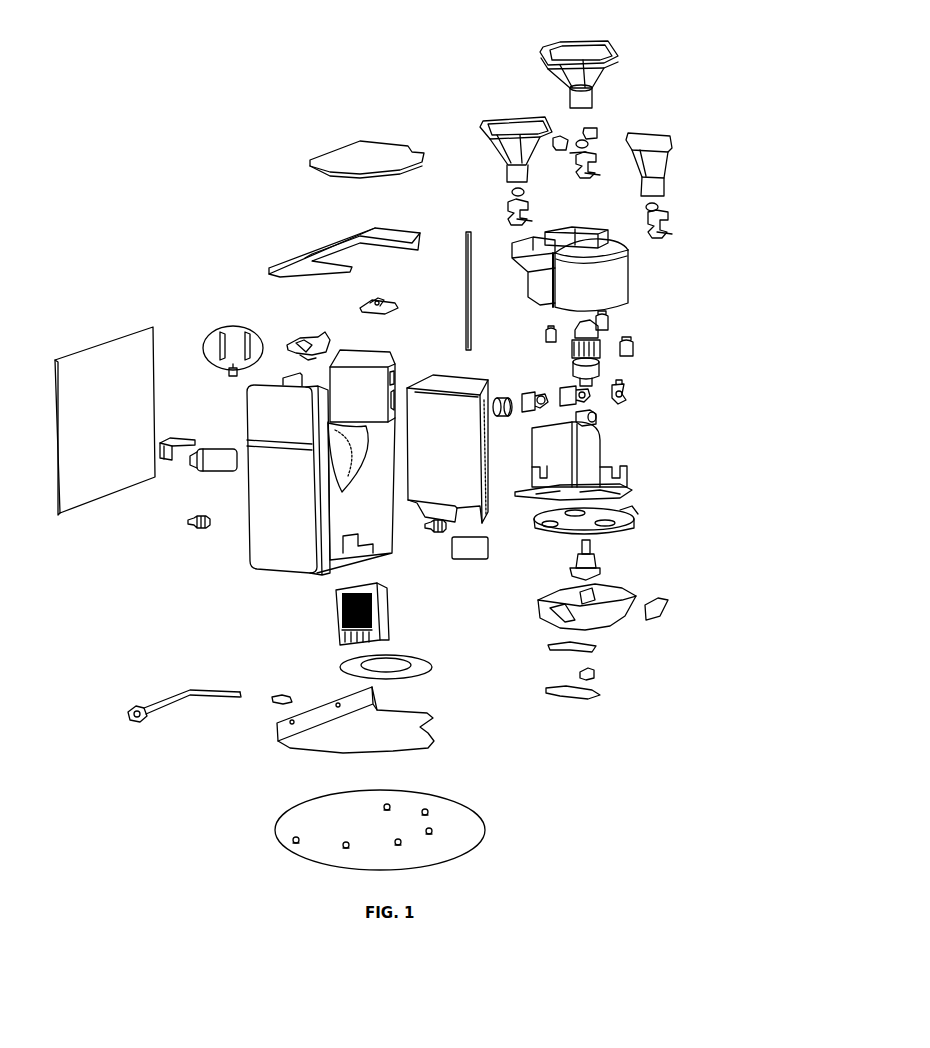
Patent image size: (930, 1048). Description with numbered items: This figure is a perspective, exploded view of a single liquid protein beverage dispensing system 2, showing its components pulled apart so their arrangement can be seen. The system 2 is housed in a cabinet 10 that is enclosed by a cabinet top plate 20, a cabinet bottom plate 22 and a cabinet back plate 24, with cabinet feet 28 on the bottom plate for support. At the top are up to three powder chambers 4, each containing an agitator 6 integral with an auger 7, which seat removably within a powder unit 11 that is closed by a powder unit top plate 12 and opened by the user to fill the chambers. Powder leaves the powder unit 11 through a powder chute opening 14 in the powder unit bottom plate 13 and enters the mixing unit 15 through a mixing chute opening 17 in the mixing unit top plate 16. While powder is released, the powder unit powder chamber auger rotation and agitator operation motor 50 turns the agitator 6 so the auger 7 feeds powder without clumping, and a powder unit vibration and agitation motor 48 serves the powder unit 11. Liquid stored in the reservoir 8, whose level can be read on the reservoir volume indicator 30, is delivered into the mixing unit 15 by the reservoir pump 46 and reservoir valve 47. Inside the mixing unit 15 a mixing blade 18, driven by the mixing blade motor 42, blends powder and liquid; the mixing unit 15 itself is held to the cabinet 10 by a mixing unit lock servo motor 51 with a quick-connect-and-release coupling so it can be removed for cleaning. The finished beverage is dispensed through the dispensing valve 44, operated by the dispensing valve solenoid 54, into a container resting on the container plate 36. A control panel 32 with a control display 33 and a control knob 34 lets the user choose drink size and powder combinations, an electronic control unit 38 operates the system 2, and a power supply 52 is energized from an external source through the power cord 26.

The dispensing system 2 is at (140, 103).
The powder chamber 4 is at (541, 72).
The agitator 6 is at (598, 150).
The auger 7 is at (600, 167).
The reservoir 8 is at (457, 387).
The cabinet 10 is at (266, 519).
The powder unit 11 is at (639, 278).
The powder unit top plate 12 is at (337, 149).
The powder unit bottom plate 13 is at (608, 448).
The powder chute opening 14 is at (562, 495).
The mixing unit 15 is at (536, 611).
The mixing unit top plate 16 is at (633, 528).
The mixing chute opening 17 is at (582, 517).
The mixing blade 18 is at (568, 563).
The cabinet top plate 20 is at (307, 250).
The cabinet bottom plate 22 is at (316, 757).
The cabinet back plate 24 is at (56, 418).
The power cord 26 is at (122, 713).
The cabinet feet 28 is at (462, 831).
The reservoir volume indicator 30 is at (463, 278).
The control panel 32 is at (402, 372).
The control display 33 is at (208, 338).
The control knob 34 is at (508, 418).
The container plate 36 is at (336, 668).
The electronic control unit 38 is at (363, 303).
The mixing blade motor 42 is at (601, 370).
The dispensing valve 44 is at (600, 652).
The reservoir pump 46 is at (292, 334).
The reservoir valve 47 is at (435, 532).
The powder unit vibration and agitation motor 48 is at (541, 333).
The powder unit powder chamber auger rotation and agitator operation motor 50 is at (530, 392).
The mixing unit lock servo motor 51 is at (600, 418).
The power supply 52 is at (327, 620).
The dispensing valve solenoid 54 is at (199, 466).